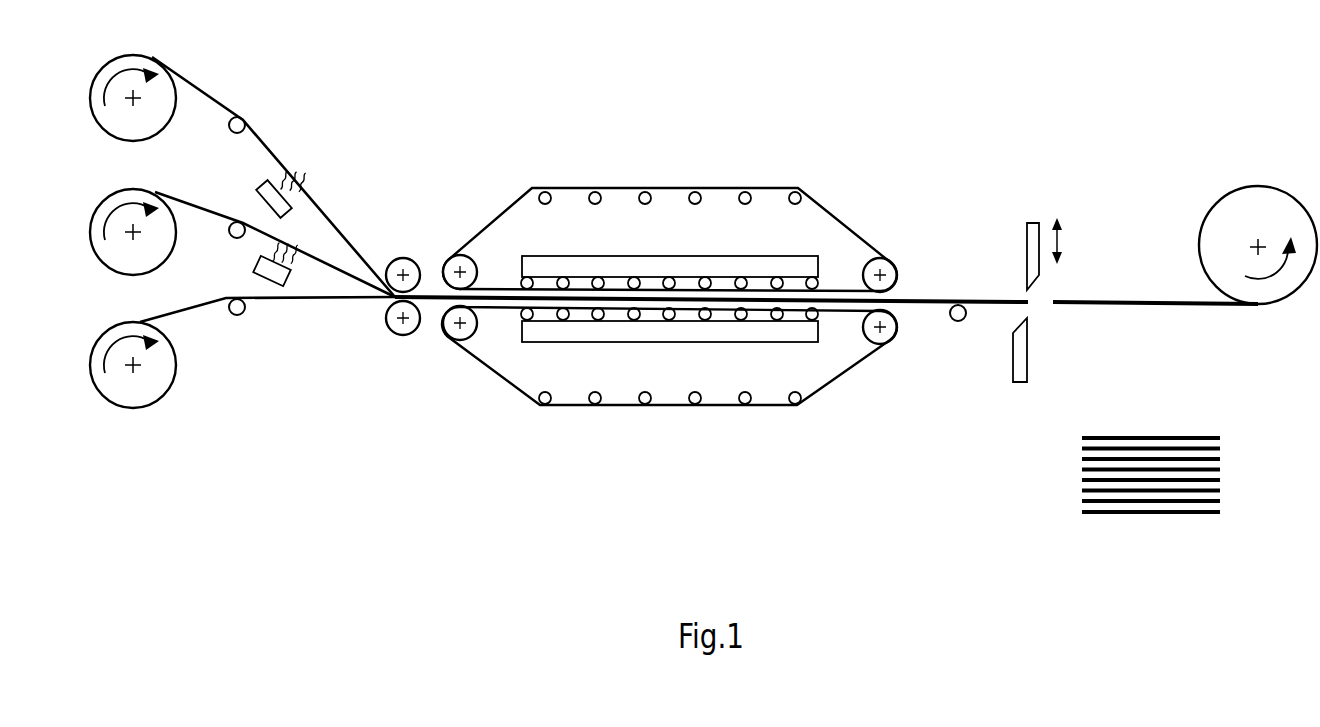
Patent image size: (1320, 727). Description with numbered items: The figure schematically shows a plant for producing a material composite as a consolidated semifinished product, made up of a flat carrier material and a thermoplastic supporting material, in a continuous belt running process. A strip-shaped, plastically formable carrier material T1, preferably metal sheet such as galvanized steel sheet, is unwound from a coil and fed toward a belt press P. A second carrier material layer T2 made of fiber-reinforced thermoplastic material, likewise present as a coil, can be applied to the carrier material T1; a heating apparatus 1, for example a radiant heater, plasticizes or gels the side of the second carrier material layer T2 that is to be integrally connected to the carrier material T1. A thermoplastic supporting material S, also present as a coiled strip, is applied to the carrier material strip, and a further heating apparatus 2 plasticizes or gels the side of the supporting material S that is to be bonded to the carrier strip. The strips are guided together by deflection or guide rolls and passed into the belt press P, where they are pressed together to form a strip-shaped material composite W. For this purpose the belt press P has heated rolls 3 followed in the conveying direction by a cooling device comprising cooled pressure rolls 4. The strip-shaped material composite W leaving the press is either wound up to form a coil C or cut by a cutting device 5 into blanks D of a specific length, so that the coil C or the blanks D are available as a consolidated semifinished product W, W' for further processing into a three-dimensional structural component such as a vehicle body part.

The heating apparatus 1 is at (256, 267).
The heating apparatus 2 is at (258, 188).
The heated rolls 3 is at (596, 280).
The cooled pressure rolls 4 is at (778, 280).
The cutting device 5 is at (1008, 248).
The thermoplastic supporting material S is at (262, 132).
The carrier material T1 is at (307, 300).
The second carrier material layer T2 is at (312, 252).
The belt press P is at (669, 260).
The material composite W is at (826, 272).
The material composite W' is at (1151, 389).
The coil C is at (1250, 196).
The blanks D is at (1210, 448).